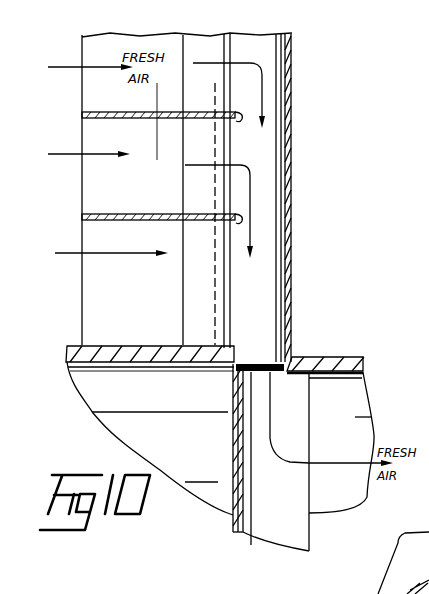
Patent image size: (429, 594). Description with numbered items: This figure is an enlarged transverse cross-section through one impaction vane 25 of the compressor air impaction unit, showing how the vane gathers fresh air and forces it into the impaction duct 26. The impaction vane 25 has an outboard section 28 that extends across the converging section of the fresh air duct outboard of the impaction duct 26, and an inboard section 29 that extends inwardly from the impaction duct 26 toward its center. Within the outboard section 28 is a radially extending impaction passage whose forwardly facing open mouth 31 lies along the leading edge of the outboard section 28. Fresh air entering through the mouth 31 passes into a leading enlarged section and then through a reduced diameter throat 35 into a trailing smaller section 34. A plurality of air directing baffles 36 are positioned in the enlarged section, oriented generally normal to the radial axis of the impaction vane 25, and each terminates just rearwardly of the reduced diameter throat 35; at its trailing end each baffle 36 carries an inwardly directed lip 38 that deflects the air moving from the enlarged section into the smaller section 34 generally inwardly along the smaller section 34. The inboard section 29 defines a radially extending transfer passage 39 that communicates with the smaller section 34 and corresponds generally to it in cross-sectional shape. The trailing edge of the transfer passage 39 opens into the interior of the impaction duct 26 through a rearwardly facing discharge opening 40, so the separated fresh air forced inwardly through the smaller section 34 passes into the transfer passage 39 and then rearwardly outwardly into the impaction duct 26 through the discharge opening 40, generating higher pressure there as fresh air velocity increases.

The impaction vane 25 is at (303, 209).
The impaction duct 26 is at (343, 363).
The outboard section 28 is at (327, 72).
The inboard section 29 is at (316, 436).
The mouth 31 is at (78, 187).
The smaller section 34 is at (278, 146).
The reduced diameter throat 35 is at (221, 366).
The air directing baffle 36 is at (114, 120).
The inwardly directed lip 38 is at (236, 120).
The transfer passage 39 is at (243, 463).
The discharge opening 40 is at (306, 481).